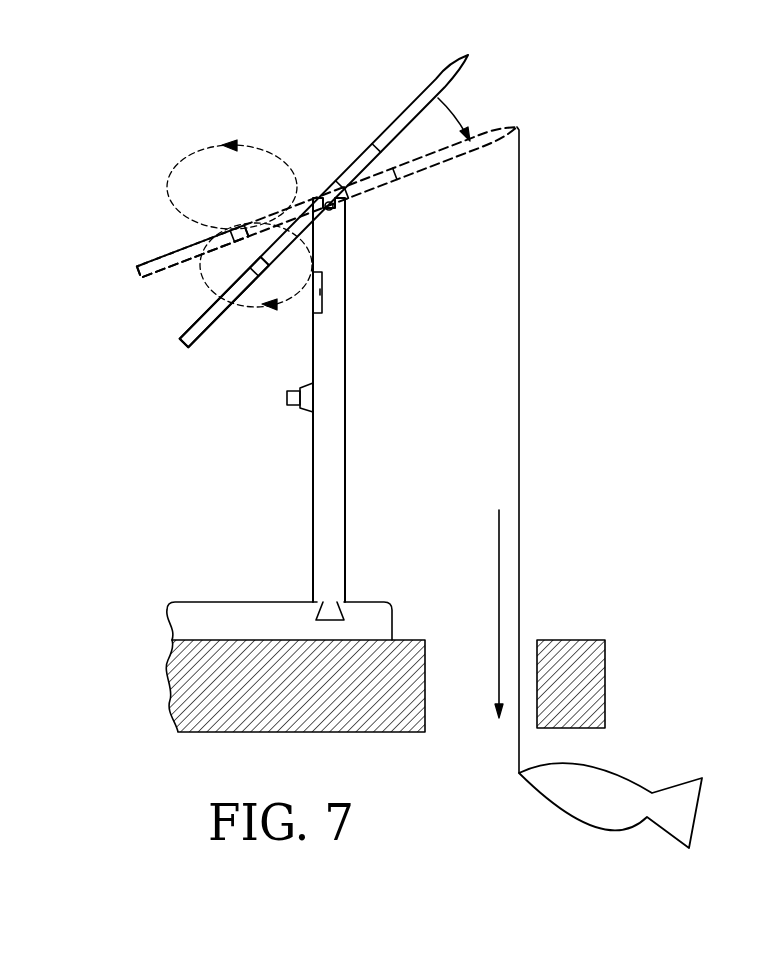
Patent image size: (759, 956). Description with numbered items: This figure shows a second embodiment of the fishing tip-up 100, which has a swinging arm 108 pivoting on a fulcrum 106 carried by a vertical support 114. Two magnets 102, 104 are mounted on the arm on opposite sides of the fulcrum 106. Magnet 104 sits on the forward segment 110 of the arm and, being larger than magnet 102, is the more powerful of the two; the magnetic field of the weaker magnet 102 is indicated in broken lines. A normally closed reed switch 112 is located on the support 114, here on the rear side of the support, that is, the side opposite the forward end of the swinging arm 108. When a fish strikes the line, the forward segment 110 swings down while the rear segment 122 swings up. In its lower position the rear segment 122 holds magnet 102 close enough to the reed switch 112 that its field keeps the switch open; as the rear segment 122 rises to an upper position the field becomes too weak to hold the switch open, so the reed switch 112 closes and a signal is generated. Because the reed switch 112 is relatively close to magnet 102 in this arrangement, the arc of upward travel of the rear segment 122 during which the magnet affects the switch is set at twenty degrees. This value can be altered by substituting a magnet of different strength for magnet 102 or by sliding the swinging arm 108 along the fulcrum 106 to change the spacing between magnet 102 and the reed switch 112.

The tip-up 100 is at (553, 407).
The magnet 102 is at (238, 228).
The magnet 104 is at (380, 184).
The fulcrum 106 is at (330, 202).
The swinging arm 108 is at (398, 122).
The forward segment 110 is at (420, 107).
The reed switch 112 is at (323, 292).
The support 114 is at (313, 512).
The rear segment 122 is at (183, 336).